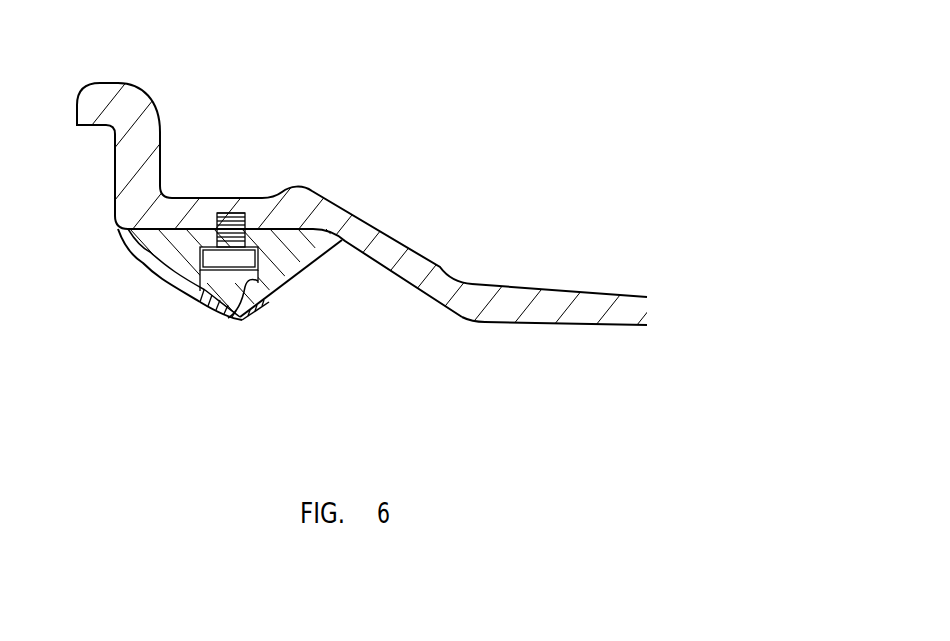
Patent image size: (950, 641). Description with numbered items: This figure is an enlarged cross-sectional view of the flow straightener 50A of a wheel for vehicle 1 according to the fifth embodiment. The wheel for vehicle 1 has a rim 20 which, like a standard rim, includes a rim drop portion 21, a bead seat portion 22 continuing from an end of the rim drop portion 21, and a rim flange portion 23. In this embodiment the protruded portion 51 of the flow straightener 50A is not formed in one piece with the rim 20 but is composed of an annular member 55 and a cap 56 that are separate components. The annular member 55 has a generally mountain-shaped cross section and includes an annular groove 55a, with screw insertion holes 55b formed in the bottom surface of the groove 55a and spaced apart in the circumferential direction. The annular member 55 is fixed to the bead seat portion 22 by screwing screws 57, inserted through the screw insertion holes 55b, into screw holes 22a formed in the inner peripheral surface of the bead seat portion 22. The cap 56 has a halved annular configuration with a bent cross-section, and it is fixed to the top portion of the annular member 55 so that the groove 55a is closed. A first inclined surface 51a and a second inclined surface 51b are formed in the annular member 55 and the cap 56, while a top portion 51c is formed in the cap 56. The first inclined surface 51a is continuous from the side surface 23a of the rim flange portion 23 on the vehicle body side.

The wheel for vehicle 1 is at (424, 218).
The rim 20 is at (424, 176).
The rim drop portion 21 is at (600, 291).
The bead seat portion 22 is at (215, 197).
The screw hole 22a is at (237, 216).
The rim flange portion 23 is at (108, 95).
The side surface of rim flange portion 23a is at (115, 173).
The flow straightener 50A is at (218, 327).
The protruded portion 51 is at (218, 316).
The first inclined surface 51a is at (157, 273).
The second inclined surface 51b is at (308, 271).
The top portion 51c is at (235, 321).
The annular member 55 is at (157, 320).
The annular groove 55a is at (243, 322).
The screw insertion hole 55b is at (192, 287).
The cap 56 is at (261, 307).
The screw 57 is at (222, 262).